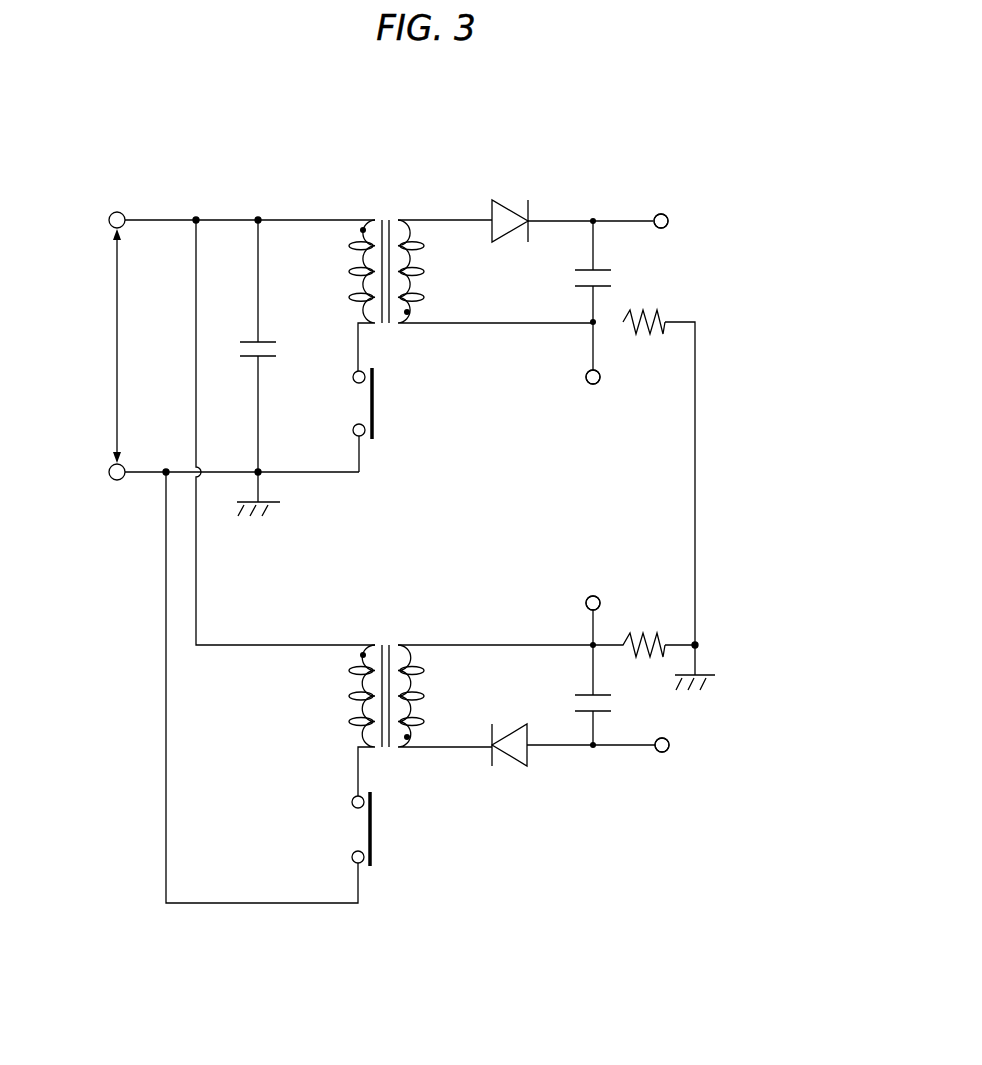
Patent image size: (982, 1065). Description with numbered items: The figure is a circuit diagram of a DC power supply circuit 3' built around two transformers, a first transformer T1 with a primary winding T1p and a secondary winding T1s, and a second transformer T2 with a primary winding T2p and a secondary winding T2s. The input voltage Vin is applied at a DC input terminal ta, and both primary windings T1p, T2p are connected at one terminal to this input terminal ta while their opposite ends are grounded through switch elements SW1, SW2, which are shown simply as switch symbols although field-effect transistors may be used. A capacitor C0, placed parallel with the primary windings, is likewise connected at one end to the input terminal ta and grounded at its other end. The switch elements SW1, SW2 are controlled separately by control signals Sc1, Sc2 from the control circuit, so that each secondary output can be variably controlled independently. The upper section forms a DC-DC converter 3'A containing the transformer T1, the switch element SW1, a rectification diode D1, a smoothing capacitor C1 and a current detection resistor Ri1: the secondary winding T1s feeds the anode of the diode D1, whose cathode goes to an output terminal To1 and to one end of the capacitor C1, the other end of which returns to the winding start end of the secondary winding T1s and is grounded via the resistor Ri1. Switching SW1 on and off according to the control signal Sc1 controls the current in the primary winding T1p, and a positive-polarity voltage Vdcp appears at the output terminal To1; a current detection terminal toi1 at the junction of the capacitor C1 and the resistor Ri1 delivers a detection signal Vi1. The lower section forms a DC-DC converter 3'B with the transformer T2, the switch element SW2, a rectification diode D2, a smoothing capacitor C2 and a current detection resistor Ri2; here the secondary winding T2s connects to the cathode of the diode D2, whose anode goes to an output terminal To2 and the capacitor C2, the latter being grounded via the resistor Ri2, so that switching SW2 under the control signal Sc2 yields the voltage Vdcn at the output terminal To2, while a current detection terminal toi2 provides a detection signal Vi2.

The DC input terminal ta is at (118, 213).
The input voltage Vin is at (104, 354).
The capacitor C0 is at (251, 341).
The transformer T1 is at (463, 250).
The primary winding T1p is at (371, 218).
The secondary winding T1s is at (495, 247).
The rectification diode D1 is at (502, 207).
The smoothing capacitor C1 is at (584, 269).
The output terminal To1 is at (664, 214).
The positive-polarity voltage Vdcp is at (689, 221).
The current detection resistor Ri1 is at (655, 318).
The current detection terminal toi1 is at (585, 377).
The detection signal Vi1 is at (592, 392).
The control signal Sc1 is at (342, 403).
The switch element SW1 is at (385, 420).
The DC-DC converter 3'A is at (415, 312).
The DC power supply circuit 3' is at (445, 500).
The transformer T2 is at (463, 675).
The primary winding T2p is at (371, 643).
The secondary winding T2s is at (495, 672).
The rectification diode D2 is at (520, 730).
The smoothing capacitor C2 is at (584, 694).
The output terminal To2 is at (665, 738).
The output voltage Vdcn is at (688, 746).
The current detection resistor Ri2 is at (655, 641).
The current detection terminal toi2 is at (585, 603).
The detection signal Vi2 is at (594, 587).
The control signal Sc2 is at (342, 829).
The switch element SW2 is at (385, 832).
The DC-DC converter 3'B is at (440, 737).